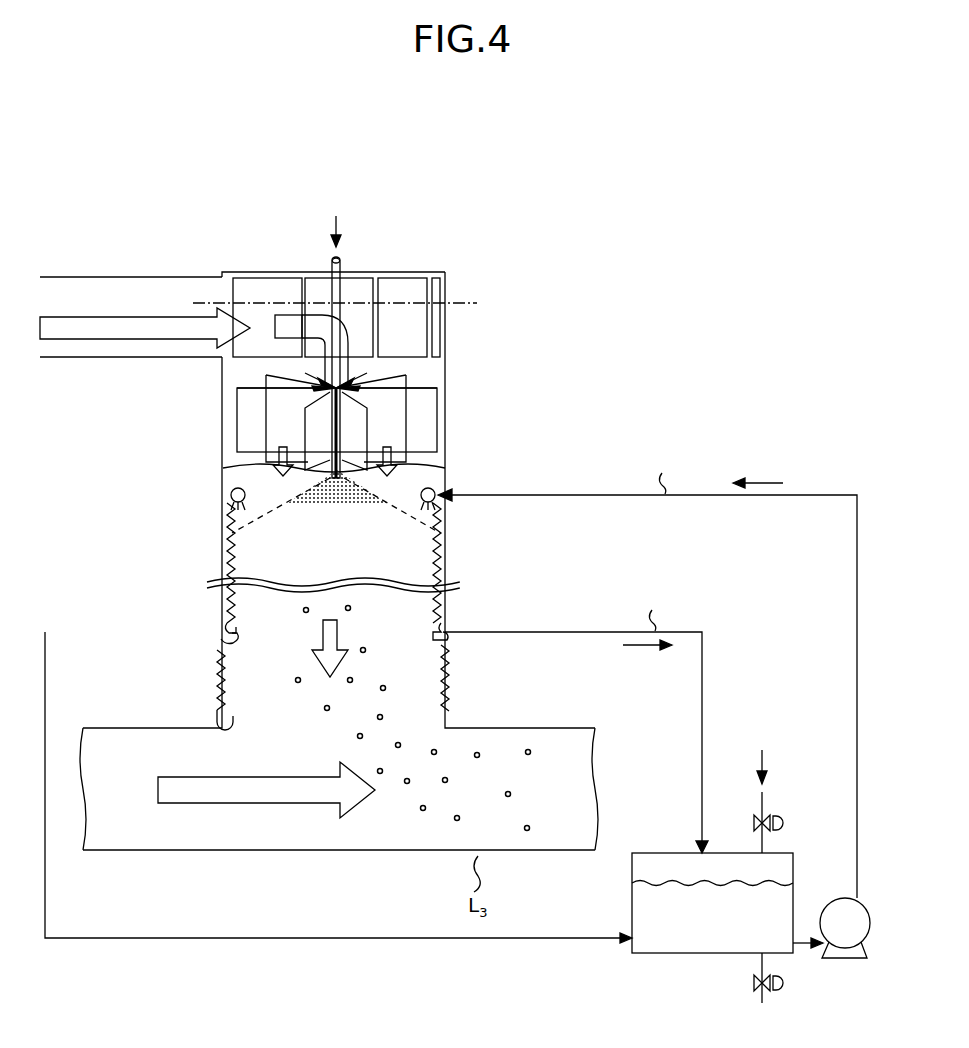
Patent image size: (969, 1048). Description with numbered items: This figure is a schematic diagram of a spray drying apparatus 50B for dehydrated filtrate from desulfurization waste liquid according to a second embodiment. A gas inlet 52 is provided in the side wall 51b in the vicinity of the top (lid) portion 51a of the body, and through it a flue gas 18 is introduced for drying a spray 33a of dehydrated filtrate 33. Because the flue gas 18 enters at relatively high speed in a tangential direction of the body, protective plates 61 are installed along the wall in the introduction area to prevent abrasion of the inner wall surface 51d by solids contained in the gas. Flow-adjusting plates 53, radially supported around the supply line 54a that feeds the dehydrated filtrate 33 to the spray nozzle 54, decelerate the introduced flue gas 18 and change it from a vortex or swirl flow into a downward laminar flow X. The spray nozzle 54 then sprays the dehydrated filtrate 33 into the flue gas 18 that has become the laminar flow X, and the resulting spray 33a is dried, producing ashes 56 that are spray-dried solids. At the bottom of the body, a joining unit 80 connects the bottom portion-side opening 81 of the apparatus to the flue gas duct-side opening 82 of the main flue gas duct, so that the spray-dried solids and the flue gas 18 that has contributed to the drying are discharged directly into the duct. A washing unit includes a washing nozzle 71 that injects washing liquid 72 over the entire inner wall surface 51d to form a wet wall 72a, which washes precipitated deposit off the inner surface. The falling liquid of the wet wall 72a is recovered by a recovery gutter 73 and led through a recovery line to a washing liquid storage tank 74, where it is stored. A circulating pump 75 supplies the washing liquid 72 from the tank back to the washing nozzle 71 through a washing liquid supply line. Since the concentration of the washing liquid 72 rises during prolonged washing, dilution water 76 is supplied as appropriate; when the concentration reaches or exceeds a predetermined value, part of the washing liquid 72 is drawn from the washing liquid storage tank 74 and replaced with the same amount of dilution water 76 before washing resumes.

The spray drying apparatus 50B is at (255, 194).
The gas inlet 52 is at (112, 277).
The top (lid) portion 51a is at (239, 272).
The side wall 51b is at (222, 425).
The inner wall surface 51d is at (445, 483).
The protective plates 61 is at (407, 290).
The supply line 54a is at (331, 290).
The dehydrated filtrate 33 is at (339, 224).
The flue gas 18 is at (113, 341).
The flow-adjusting plates 53 is at (425, 412).
The laminar flow X is at (403, 467).
The spray nozzle 54 is at (332, 478).
The spray 33a is at (320, 508).
The washing nozzle 71 is at (231, 498).
The washing liquid 72 is at (438, 545).
The wet wall 72a is at (208, 580).
The recovery gutter 73 is at (225, 640).
The flue gas duct-side opening 82 is at (213, 724).
The joining unit 80 is at (455, 675).
The bottom portion-side opening 81 is at (449, 639).
The ashes 56 is at (386, 690).
The washing liquid storage tank 74 is at (632, 906).
The circulating pump 75 is at (859, 901).
The dilution water 76 is at (768, 767).